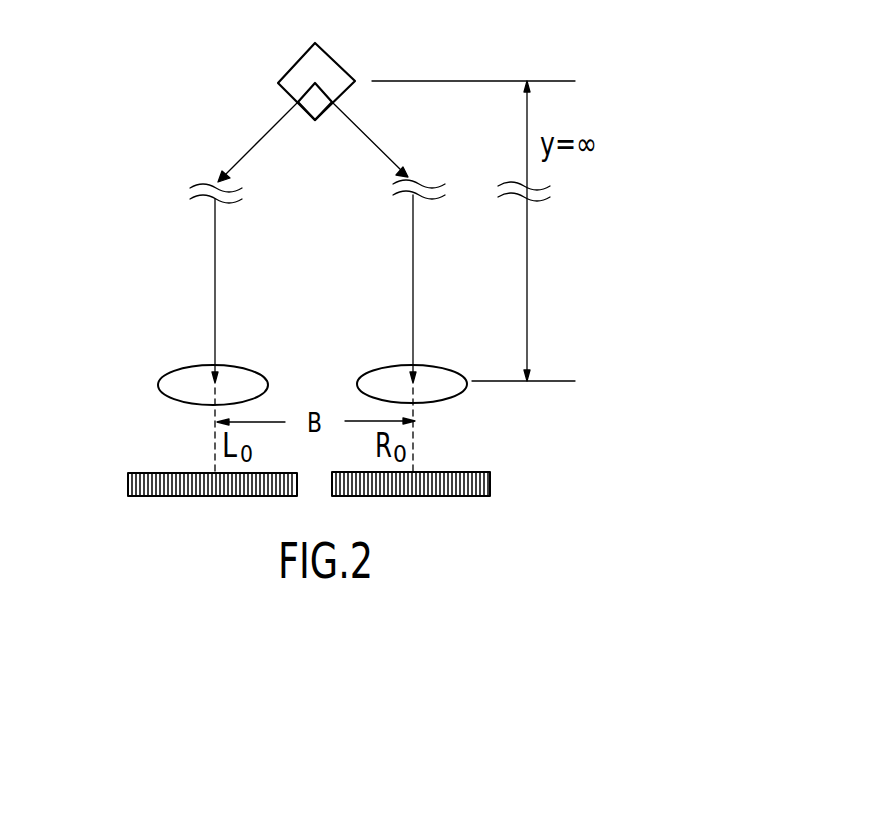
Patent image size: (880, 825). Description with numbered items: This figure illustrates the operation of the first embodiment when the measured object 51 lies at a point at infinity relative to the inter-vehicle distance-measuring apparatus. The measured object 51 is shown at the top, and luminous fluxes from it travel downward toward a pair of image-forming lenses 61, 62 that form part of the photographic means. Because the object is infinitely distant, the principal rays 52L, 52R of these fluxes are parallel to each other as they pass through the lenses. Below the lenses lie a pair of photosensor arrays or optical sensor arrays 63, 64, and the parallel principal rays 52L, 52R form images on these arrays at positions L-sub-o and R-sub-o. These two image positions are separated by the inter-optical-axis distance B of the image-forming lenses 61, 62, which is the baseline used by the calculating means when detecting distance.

The measured object 51 is at (325, 70).
The principal ray 52L is at (215, 243).
The principal ray 52R is at (413, 298).
The image-forming lens 61 is at (178, 377).
The image-forming lens 62 is at (445, 368).
The photosensor array 63 is at (130, 480).
The photosensor array 64 is at (490, 482).